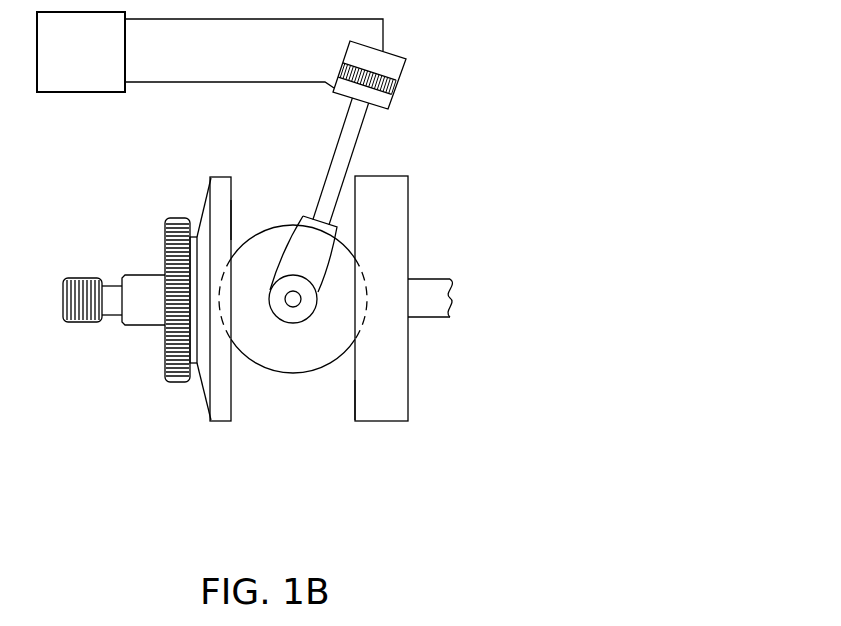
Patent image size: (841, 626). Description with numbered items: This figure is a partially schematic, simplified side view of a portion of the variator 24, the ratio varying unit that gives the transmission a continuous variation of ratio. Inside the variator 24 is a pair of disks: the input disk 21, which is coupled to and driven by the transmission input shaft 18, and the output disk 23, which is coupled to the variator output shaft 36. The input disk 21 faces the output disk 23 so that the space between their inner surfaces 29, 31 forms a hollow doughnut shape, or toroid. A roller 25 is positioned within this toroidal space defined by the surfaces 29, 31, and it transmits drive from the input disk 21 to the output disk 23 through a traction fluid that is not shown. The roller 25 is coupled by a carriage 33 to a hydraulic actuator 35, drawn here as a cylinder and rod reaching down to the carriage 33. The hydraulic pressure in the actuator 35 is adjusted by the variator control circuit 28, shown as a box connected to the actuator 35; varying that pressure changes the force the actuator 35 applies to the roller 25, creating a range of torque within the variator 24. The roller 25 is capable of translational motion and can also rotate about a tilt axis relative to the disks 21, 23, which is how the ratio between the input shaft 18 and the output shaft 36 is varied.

The transmission input shaft 18 is at (133, 328).
The input disk 21 is at (212, 178).
The output disk 23 is at (384, 182).
The variator 24 is at (248, 442).
The roller 25 is at (296, 372).
The variator control circuit 28 is at (100, 66).
The inner surface of input disk 29 is at (225, 215).
The inner surface of output disk 31 is at (385, 404).
The carriage 33 is at (308, 222).
The hydraulic actuator 35 is at (440, 68).
The variator output shaft 36 is at (430, 286).